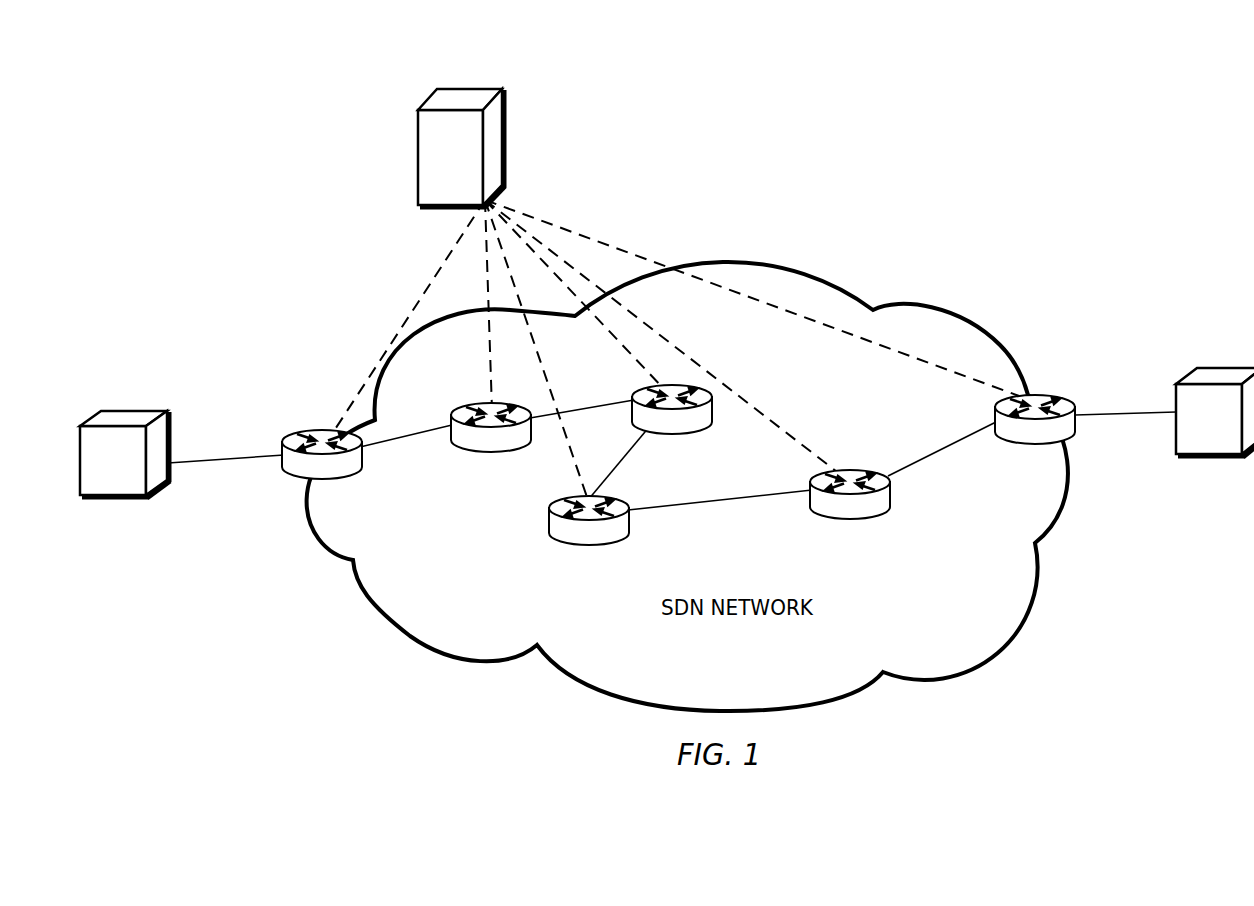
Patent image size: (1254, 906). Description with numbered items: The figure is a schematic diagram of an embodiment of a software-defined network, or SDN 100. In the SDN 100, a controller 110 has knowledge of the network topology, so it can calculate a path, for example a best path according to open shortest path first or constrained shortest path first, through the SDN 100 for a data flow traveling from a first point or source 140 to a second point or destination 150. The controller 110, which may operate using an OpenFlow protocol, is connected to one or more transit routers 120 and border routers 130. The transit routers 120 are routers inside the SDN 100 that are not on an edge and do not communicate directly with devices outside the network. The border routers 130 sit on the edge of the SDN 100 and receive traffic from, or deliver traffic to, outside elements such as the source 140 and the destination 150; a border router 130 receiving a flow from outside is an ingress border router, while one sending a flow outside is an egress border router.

The SDN 100 is at (101, 89).
The controller 110 is at (418, 171).
The transit router 120 is at (465, 405).
The border router 130 is at (308, 433).
The source 140 is at (142, 412).
The destination 150 is at (1237, 368).